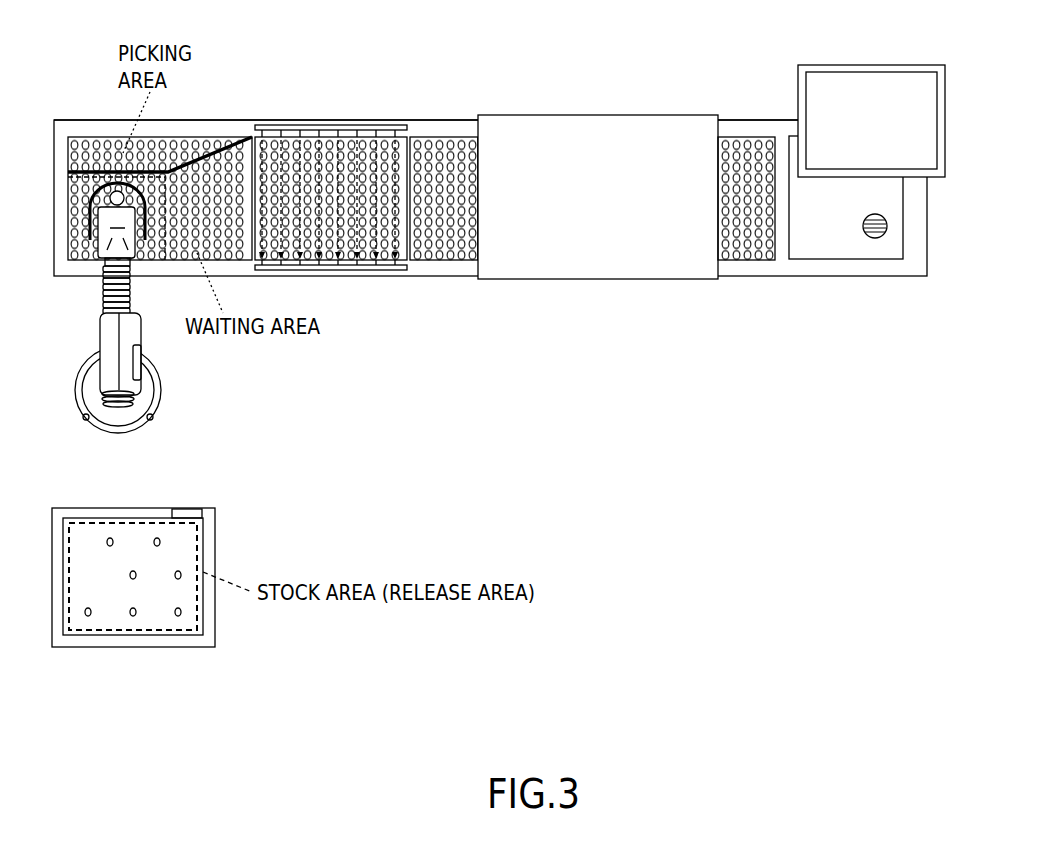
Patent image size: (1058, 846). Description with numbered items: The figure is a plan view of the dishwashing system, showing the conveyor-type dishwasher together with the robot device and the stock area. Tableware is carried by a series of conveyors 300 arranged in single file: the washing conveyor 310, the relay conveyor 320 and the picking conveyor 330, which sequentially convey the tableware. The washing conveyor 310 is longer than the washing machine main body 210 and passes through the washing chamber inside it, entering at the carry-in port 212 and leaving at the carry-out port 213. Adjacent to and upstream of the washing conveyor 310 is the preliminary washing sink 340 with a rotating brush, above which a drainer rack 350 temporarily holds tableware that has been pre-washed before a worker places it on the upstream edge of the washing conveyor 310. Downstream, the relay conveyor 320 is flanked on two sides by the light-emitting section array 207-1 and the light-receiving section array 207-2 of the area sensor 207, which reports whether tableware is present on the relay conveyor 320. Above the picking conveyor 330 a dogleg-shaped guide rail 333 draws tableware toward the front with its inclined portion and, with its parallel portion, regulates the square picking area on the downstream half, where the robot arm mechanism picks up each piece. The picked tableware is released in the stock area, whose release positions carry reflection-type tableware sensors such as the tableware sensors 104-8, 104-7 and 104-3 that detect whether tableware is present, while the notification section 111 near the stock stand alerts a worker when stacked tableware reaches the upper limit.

The series of conveyors 300 is at (740, 98).
The picking conveyor 330 is at (92, 142).
The guide rail 333 is at (207, 153).
The area sensor 207 is at (332, 184).
The light-emitting section array 207-1 is at (312, 125).
The light-receiving section array 207-2 is at (338, 275).
The relay conveyor 320 is at (363, 157).
The washing conveyor 310 is at (447, 142).
The carry-out port 213 is at (472, 230).
The washing machine main body 210 is at (567, 115).
The carry-in port 212 is at (722, 233).
The preliminary washing sink 340 is at (843, 246).
The drainer rack 350 is at (867, 65).
The notification section 111 is at (200, 513).
The tableware sensor 104-8 is at (110, 538).
The tableware sensor 104-7 is at (160, 542).
The tableware sensor 104-3 is at (90, 614).